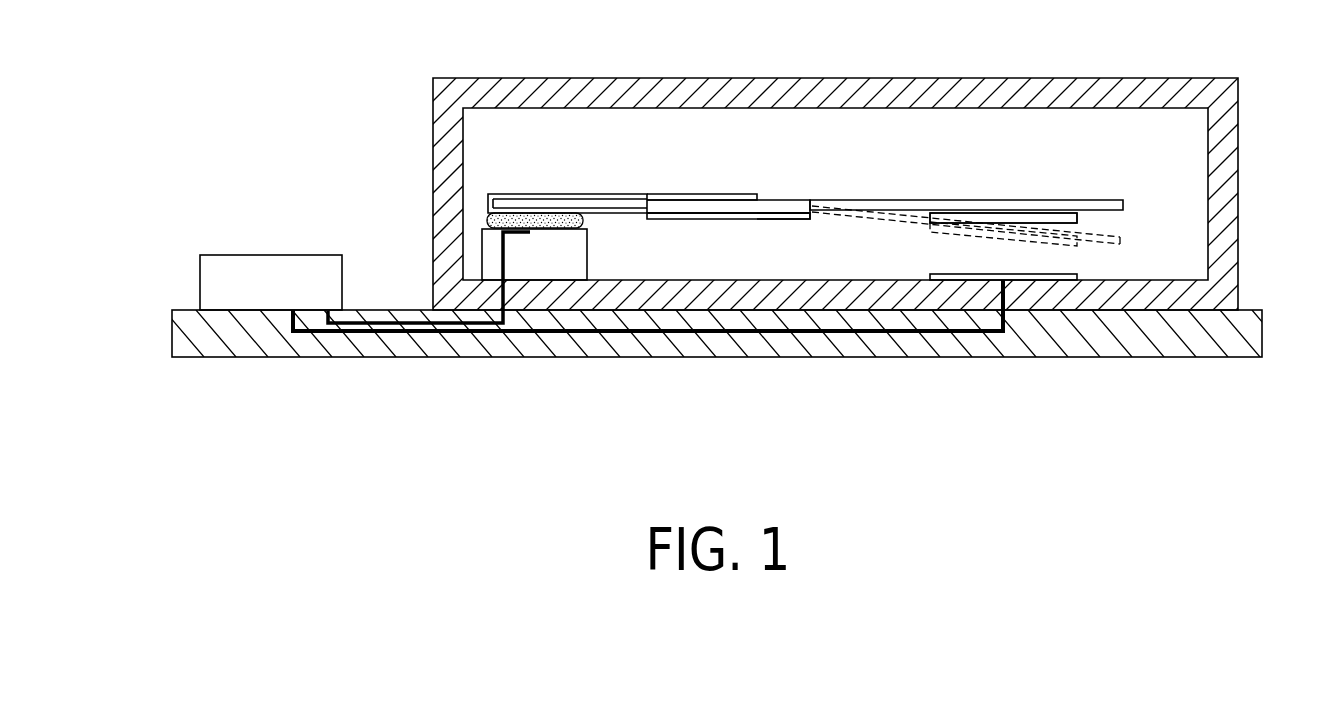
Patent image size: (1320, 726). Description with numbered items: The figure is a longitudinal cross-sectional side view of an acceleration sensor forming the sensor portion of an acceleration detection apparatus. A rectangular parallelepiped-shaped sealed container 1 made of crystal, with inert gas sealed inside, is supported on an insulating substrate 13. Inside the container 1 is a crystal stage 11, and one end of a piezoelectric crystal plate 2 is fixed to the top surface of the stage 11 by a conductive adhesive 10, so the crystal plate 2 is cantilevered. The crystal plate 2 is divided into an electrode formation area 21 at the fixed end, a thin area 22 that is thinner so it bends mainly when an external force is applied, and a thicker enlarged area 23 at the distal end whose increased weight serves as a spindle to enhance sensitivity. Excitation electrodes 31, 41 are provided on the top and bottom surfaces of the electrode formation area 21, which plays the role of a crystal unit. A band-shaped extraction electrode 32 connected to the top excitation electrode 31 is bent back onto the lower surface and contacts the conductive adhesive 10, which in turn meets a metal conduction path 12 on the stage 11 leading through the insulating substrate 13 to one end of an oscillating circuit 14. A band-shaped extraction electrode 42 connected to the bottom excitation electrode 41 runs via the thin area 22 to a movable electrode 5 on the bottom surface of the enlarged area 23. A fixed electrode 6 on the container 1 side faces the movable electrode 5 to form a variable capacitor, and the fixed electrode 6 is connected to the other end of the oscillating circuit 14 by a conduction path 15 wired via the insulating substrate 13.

The sealed container 1 is at (1165, 78).
The crystal plate 2 is at (805, 218).
The movable electrode 5 is at (1078, 212).
The fixed electrode 6 is at (1077, 276).
The conductive adhesive 10 is at (545, 213).
The stage 11 is at (578, 257).
The conduction path 12 is at (375, 311).
The insulating substrate 13 is at (712, 366).
The oscillating circuit 14 is at (271, 255).
The conduction path 15 is at (920, 333).
The electrode formation area 21 is at (725, 205).
The thin area 22 is at (865, 200).
The enlarged area 23 is at (962, 200).
The excitation electrode 31 is at (683, 194).
The extraction electrode 32 is at (602, 194).
The excitation electrode 41 is at (708, 220).
The extraction electrode 42 is at (792, 220).